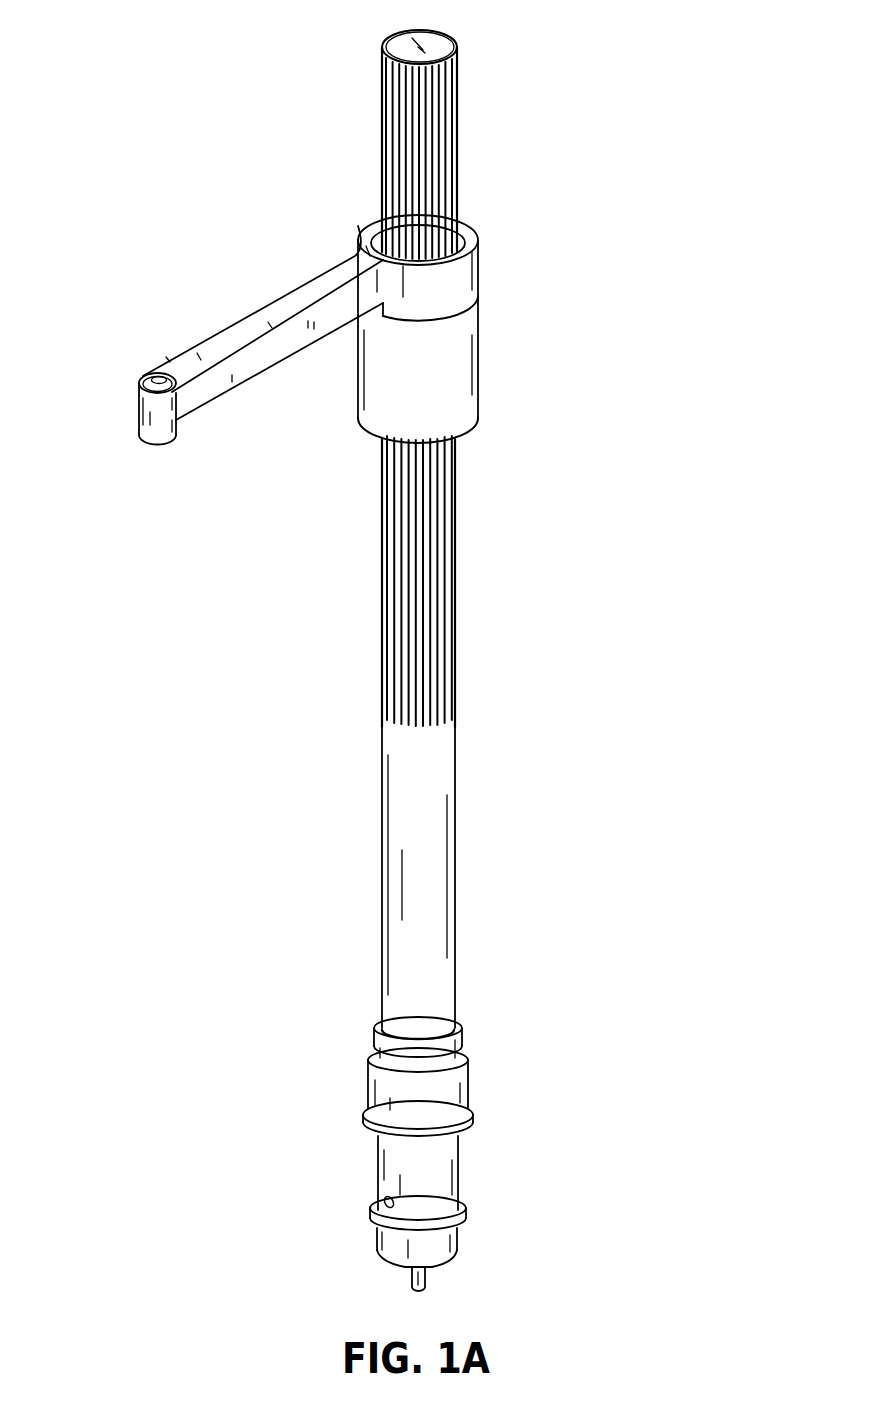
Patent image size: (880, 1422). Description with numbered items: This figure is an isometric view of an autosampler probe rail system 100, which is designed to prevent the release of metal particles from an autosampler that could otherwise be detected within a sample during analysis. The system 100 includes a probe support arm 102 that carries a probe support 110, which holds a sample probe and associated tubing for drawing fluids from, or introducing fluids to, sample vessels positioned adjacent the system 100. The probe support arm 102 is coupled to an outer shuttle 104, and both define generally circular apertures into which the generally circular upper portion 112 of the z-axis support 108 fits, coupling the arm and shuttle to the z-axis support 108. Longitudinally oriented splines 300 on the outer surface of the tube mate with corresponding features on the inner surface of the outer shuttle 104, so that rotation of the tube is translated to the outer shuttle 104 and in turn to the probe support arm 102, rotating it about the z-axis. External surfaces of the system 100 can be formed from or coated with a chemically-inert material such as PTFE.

The autosampler probe rail system 100 is at (582, 118).
The probe support arm 102 is at (232, 340).
The outer shuttle 104 is at (460, 363).
The z-axis support 108 is at (437, 768).
The probe support 110 is at (140, 460).
The upper portion 112 is at (427, 36).
The splines 300 is at (440, 583).